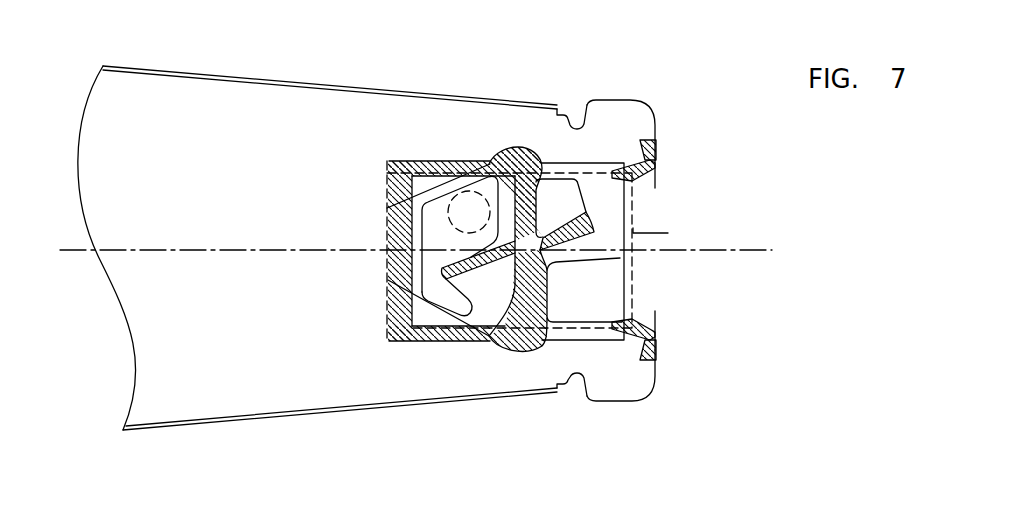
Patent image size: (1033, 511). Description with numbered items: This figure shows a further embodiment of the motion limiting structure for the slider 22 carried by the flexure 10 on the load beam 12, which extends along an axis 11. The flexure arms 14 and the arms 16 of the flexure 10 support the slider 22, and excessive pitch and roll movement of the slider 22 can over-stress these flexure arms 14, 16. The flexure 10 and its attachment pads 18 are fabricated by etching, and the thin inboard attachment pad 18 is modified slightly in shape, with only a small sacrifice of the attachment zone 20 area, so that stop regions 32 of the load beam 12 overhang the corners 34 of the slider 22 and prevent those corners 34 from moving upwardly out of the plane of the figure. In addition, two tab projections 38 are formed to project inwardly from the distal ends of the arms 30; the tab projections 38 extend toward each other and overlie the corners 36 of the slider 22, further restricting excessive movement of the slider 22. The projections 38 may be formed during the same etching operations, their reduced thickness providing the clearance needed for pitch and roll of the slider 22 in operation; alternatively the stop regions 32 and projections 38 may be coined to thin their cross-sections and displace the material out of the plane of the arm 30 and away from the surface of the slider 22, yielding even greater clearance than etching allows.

The flexure 10 is at (684, 238).
The axis 11 is at (277, 250).
The load beam 12 is at (292, 112).
The flexure arms 14 is at (527, 207).
The arms 16 is at (580, 209).
The attachment pads 18 is at (388, 242).
The attachment zone 20 is at (395, 215).
The slider 22 is at (673, 230).
The arms 30 is at (625, 116).
The stop regions 32 is at (446, 168).
The corners 34 is at (400, 173).
The corners 36 is at (632, 178).
The tab projections 38 is at (651, 158).